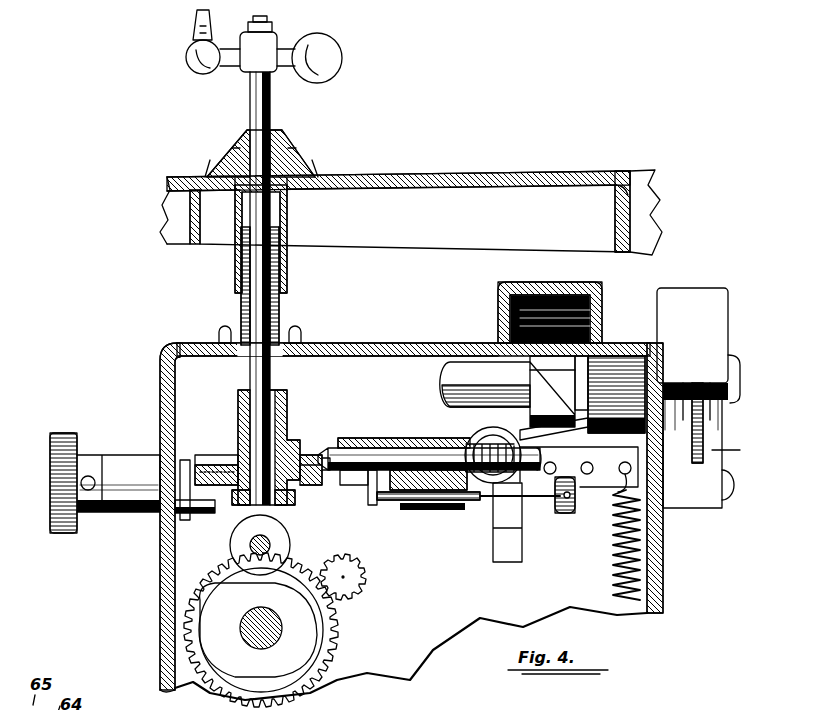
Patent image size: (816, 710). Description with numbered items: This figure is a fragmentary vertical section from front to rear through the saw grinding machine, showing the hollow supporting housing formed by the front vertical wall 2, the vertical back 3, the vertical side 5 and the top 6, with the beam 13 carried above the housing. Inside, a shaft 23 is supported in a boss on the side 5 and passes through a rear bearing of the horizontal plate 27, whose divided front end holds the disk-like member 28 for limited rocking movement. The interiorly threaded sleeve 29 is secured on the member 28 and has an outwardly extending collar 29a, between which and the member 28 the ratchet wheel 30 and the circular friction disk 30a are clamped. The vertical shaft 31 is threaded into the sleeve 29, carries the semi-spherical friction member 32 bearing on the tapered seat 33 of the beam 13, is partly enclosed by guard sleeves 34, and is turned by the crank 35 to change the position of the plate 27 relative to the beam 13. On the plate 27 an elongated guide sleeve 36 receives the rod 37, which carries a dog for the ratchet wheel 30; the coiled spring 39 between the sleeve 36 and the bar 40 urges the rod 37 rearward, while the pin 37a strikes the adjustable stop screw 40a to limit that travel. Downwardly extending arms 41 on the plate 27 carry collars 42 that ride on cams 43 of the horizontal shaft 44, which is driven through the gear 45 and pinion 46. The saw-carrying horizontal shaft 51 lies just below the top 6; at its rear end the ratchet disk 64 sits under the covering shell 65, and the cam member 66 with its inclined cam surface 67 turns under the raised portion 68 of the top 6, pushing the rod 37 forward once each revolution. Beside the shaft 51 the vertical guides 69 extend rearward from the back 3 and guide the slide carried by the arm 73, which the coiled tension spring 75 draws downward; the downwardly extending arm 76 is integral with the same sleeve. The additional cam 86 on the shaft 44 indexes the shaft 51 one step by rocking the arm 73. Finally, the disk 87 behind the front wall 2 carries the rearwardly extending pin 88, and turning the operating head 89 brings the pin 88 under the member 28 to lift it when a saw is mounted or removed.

The front vertical wall 2 is at (160, 605).
The vertical back 3 is at (663, 556).
The vertical side 5 is at (437, 654).
The top 6 is at (375, 343).
The beam 13 is at (452, 176).
The shaft 23 is at (480, 440).
The horizontal plate 27 is at (426, 506).
The disk-like member 28 is at (310, 492).
The interiorly threaded sleeve 29 is at (288, 438).
The outwardly extending collar 29a is at (230, 455).
The ratchet wheel 30 is at (205, 455).
The circular friction disk 30a is at (322, 452).
The vertical shaft 31 is at (279, 316).
The semi-spherical friction member 32 is at (285, 170).
The tapered seat 33 is at (225, 160).
The guard sleeves 34 is at (272, 150).
The crank 35 is at (286, 78).
The elongated guide sleeve 36 is at (368, 438).
The rod 37 is at (405, 450).
The pin 37a is at (373, 506).
The coiled spring 39 is at (496, 444).
The bar 40 is at (525, 446).
The adjustable stop screw 40a is at (470, 502).
The downwardly extending arms 41 is at (240, 525).
The collars 42 is at (231, 550).
The cams 43 is at (311, 615).
The horizontal shaft 44 is at (240, 634).
The gear 45 is at (324, 650).
The pinion 46 is at (366, 580).
The horizontal shaft 51 is at (444, 370).
The ratchet disk 64 is at (705, 449).
The covering shell 65 is at (720, 320).
The cam member 66 is at (590, 420).
The inclined cam surface 67 is at (542, 381).
The raised portion 68 is at (600, 300).
The vertical guides 69 is at (694, 498).
The arm 73 is at (604, 486).
The coiled tension spring 75 is at (614, 540).
The downwardly extending arm 76 is at (522, 536).
The additional cam 86 is at (262, 665).
The disk 87 is at (165, 515).
The rearwardly extending pin 88 is at (166, 545).
The operating head 89 is at (59, 538).